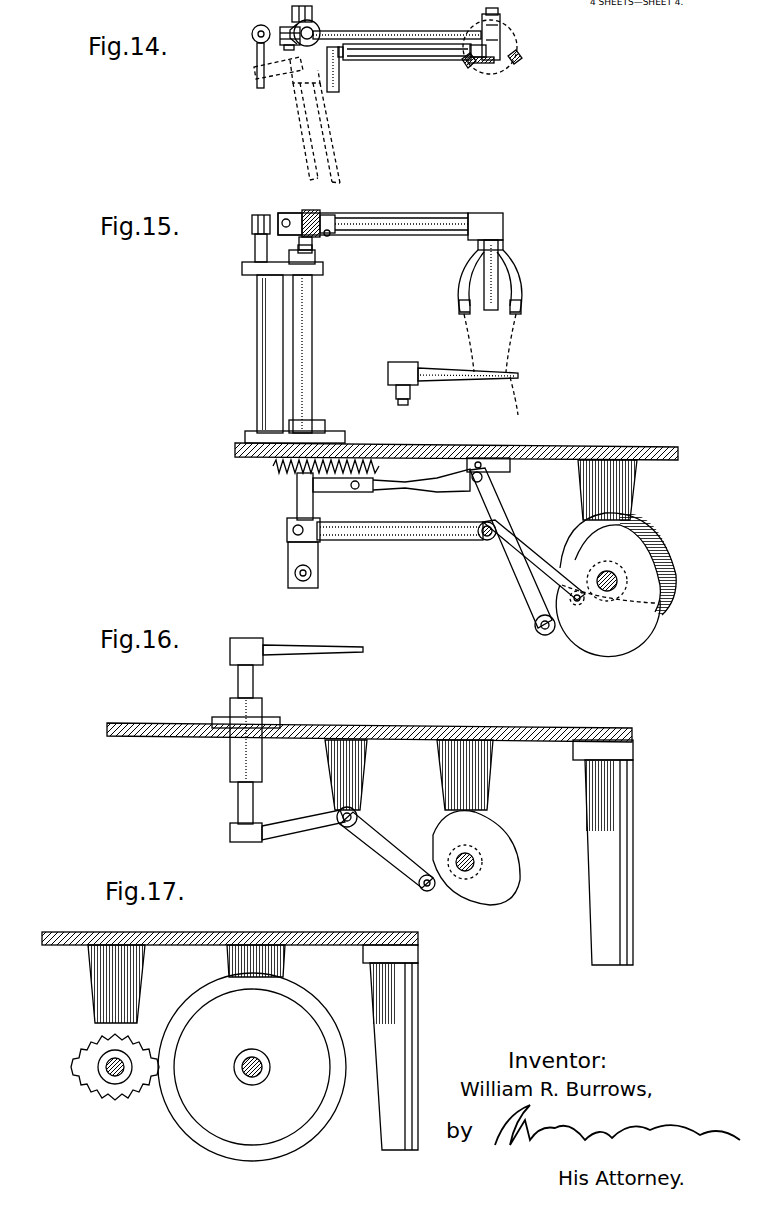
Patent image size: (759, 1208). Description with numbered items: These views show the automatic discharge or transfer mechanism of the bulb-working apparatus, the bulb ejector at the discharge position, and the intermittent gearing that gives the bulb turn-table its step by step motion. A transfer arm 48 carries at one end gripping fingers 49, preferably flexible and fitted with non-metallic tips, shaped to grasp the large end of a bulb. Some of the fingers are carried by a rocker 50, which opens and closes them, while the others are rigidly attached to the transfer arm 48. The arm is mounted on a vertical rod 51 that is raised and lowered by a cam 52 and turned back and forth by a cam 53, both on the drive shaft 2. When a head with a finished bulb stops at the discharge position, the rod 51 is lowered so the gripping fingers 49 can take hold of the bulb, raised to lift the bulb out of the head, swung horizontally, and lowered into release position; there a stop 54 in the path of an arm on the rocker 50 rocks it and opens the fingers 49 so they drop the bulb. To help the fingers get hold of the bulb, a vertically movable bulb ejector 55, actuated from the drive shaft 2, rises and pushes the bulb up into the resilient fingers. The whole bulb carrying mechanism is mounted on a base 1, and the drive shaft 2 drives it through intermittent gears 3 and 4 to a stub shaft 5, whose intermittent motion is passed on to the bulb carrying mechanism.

In FIG. 15, the base 1 is at (527, 444).
In FIG. 16, the base 1 is at (470, 735).
In FIG. 17, the base 1 is at (55, 946).
In FIG. 15, the drive shaft 2 is at (586, 583).
In FIG. 16, the drive shaft 2 is at (466, 875).
In FIG. 17, the drive shaft 2 is at (262, 1080).
In FIG. 17, the intermittent gear 3 is at (310, 997).
In FIG. 17, the intermittent gear 4 is at (70, 1062).
In FIG. 17, the stub shaft 5 is at (108, 1072).
In FIG. 14, the transfer arm 48 is at (405, 33).
In FIG. 15, the transfer arm 48 is at (428, 214).
In FIG. 14, the gripping fingers 49 is at (517, 57).
In FIG. 15, the gripping fingers 49 is at (495, 287).
In FIG. 14, the rocker 50 is at (385, 58).
In FIG. 15, the rocker 50 is at (400, 231).
In FIG. 14, the vertical rod 51 is at (300, 28).
In FIG. 15, the vertical rod 51 is at (312, 325).
In FIG. 15, the cam 52 is at (662, 634).
In FIG. 15, the cam 53 is at (670, 552).
In FIG. 14, the stop 54 is at (256, 58).
In FIG. 15, the stop 54 is at (255, 216).
In FIG. 15, the bulb ejector 55 is at (462, 380).
In FIG. 16, the bulb ejector 55 is at (337, 648).